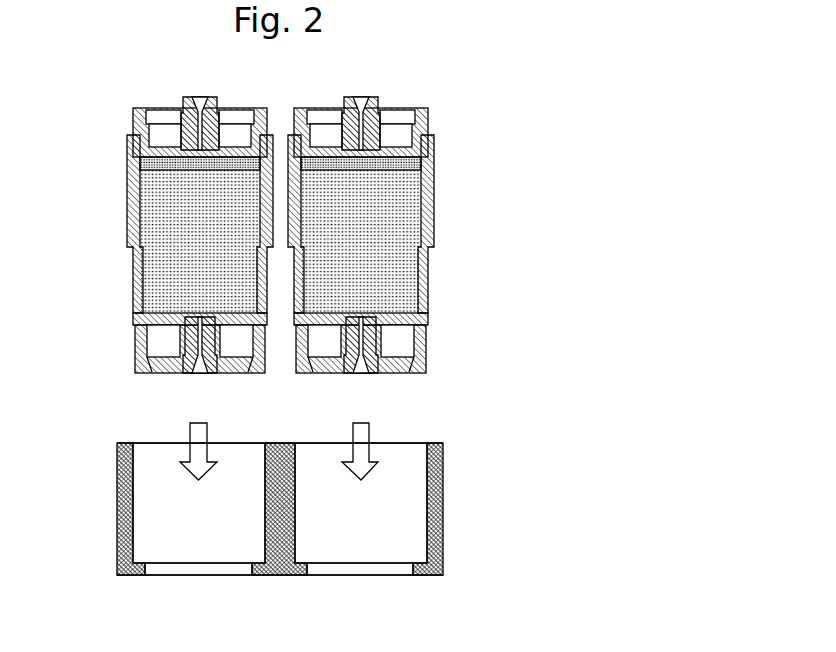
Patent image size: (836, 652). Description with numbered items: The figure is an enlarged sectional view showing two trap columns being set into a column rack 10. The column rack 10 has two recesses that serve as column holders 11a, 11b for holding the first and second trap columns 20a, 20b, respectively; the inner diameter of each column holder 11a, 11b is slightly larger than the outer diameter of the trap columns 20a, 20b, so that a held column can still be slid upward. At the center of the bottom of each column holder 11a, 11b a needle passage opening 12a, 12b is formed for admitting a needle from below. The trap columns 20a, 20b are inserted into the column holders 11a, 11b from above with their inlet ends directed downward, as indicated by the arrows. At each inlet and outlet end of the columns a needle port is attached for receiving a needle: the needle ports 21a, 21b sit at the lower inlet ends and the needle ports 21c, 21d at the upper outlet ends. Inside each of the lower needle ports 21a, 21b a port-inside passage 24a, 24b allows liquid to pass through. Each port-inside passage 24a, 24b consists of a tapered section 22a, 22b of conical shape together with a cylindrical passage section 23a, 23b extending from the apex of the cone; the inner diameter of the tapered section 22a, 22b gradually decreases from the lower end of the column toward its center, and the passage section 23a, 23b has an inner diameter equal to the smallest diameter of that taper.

The column rack 10 is at (285, 520).
The column holder 11a is at (152, 532).
The column holder 11b is at (413, 533).
The needle passage opening 12a is at (195, 570).
The needle passage opening 12b is at (358, 572).
The first trap column 20a is at (152, 236).
The second trap column 20b is at (409, 236).
The needle port 21a is at (213, 372).
The needle port 21b is at (342, 364).
The needle port 21c is at (213, 93).
The needle port 21d is at (342, 105).
The tapered section 22a is at (187, 362).
The tapered section 22b is at (387, 349).
The passage section 23a is at (180, 342).
The passage section 23b is at (393, 348).
The port-inside passage 24a is at (148, 349).
The port-inside passage 24b is at (413, 349).